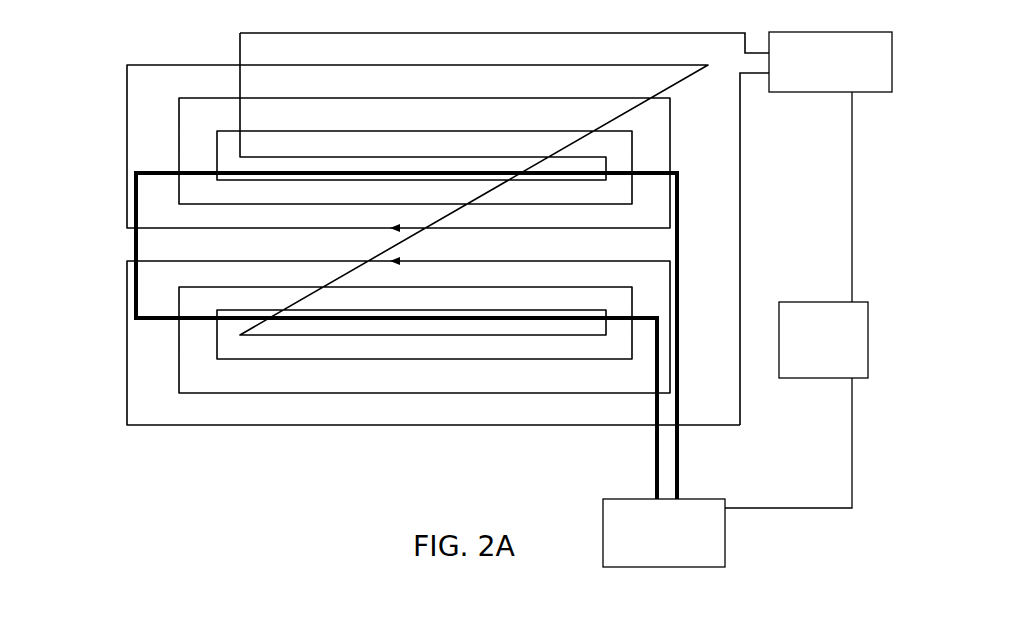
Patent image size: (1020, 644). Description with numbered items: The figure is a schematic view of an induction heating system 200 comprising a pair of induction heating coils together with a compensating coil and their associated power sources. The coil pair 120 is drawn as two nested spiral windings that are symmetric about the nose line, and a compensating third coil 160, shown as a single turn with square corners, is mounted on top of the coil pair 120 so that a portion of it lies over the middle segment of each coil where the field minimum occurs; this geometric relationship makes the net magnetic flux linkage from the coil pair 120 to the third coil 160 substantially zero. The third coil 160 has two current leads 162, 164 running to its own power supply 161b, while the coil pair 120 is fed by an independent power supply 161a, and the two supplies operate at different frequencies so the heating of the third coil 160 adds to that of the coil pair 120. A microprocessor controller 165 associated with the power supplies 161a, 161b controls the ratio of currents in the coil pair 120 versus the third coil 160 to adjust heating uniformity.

The induction heating system 200 is at (289, 30).
The coil pair 120 is at (108, 228).
The third coil 160 is at (678, 212).
The power supply 161a is at (818, 92).
The power supply 161b is at (725, 547).
The current lead 162 is at (679, 468).
The current lead 164 is at (655, 468).
The microprocessor controller 165 is at (813, 378).